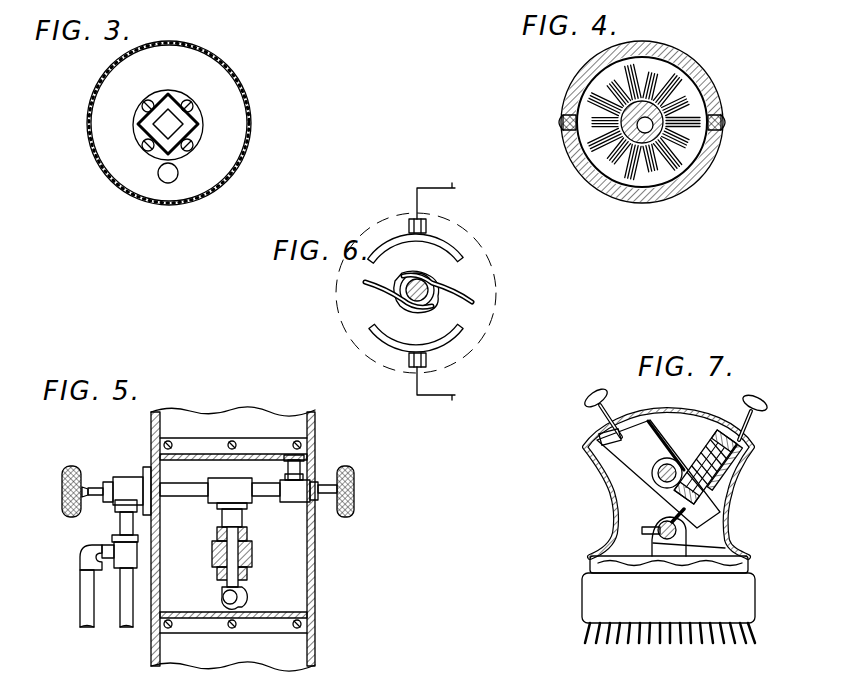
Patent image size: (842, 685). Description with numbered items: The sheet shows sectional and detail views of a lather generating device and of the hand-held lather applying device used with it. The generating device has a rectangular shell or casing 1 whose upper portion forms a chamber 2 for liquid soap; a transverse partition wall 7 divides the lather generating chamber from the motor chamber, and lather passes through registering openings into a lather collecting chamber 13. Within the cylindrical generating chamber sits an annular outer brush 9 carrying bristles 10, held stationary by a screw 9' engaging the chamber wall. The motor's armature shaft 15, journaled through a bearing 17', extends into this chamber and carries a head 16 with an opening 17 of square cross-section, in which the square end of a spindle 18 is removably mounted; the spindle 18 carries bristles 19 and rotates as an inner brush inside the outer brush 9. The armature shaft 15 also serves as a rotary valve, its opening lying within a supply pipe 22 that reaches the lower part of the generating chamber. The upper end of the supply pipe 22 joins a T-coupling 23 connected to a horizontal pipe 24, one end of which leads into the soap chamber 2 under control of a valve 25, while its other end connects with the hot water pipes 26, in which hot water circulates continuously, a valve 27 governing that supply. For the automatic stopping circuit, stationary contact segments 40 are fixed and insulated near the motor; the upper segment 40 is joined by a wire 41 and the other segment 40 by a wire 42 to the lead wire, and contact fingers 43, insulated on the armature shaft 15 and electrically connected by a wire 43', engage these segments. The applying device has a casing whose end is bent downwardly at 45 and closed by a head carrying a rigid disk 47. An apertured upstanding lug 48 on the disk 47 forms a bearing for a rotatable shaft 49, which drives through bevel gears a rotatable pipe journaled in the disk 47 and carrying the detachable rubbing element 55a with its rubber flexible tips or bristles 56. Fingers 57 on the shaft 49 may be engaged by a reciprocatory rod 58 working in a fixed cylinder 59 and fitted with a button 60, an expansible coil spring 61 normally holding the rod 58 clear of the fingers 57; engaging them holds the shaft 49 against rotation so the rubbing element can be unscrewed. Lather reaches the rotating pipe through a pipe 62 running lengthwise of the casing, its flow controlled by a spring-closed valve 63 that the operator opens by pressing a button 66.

In FIG. 5, the shell or casing 1 is at (320, 648).
In FIG. 5, the chamber 2 is at (233, 434).
In FIG. 3, the transverse partition wall 7 is at (228, 88).
In FIG. 4, the annular outer brush 9 is at (642, 125).
In FIG. 4, the screw 9' is at (638, 120).
In FIG. 4, the bristles 10 is at (684, 88).
In FIG. 5, the lather collecting chamber 13 is at (233, 638).
In FIG. 6, the armature shaft 15 is at (430, 283).
In FIG. 3, the head 16 is at (172, 107).
In FIG. 3, the opening 17 is at (111, 141).
In FIG. 3, the bearing 17' is at (241, 124).
In FIG. 4, the spindle 18 is at (625, 170).
In FIG. 4, the bristles 19 is at (722, 165).
In FIG. 5, the supply pipe 22 is at (246, 584).
In FIG. 5, the T-coupling 23 is at (230, 484).
In FIG. 5, the horizontal pipe 24 is at (176, 480).
In FIG. 5, the valve 25 is at (303, 490).
In FIG. 5, the pipes 26 is at (109, 582).
In FIG. 5, the valve 27 is at (66, 467).
In FIG. 6, the stationary contact segments 40 is at (458, 250).
In FIG. 6, the wire 41 is at (439, 194).
In FIG. 6, the wire 42 is at (439, 390).
In FIG. 6, the contact fingers 43 is at (403, 290).
In FIG. 6, the wire 43' is at (364, 312).
In FIG. 7, the downwardly bent end 45 is at (611, 528).
In FIG. 7, the disk 47 is at (607, 564).
In FIG. 7, the upstanding lug 48 is at (690, 532).
In FIG. 7, the rotatable shaft 49 is at (650, 542).
In FIG. 7, the brush back 55a is at (757, 614).
In FIG. 7, the flexible tips or bristles 56 is at (727, 638).
In FIG. 7, the fingers 57 is at (700, 540).
In FIG. 7, the reciprocatory rod 58 is at (748, 429).
In FIG. 7, the fixed cylinder 59 is at (739, 466).
In FIG. 7, the button 60 is at (757, 399).
In FIG. 7, the expansible coil spring 61 is at (741, 484).
In FIG. 7, the pipe 62 is at (651, 478).
In FIG. 7, the valve 63 is at (688, 446).
In FIG. 7, the button 66 is at (590, 407).